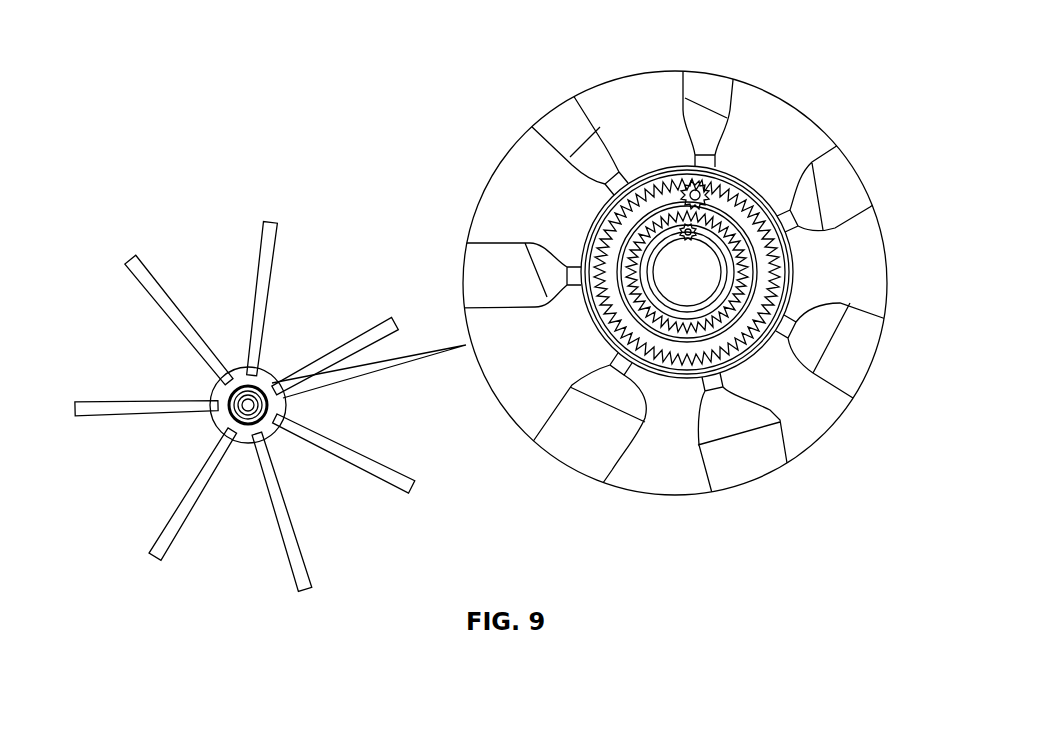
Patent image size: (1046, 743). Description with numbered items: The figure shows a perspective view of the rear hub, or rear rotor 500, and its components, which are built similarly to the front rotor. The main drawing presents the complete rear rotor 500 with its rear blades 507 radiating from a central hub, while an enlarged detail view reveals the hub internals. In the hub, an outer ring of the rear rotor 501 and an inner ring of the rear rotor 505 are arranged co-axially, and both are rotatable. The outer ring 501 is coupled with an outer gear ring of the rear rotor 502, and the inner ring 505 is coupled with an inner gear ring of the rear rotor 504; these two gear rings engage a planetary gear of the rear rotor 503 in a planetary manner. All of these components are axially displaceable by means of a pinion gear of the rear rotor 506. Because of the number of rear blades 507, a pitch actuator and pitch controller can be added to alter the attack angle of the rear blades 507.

The fan 500 is at (245, 377).
The outer ring of the rear rotor 501 is at (584, 215).
The outer gear ring of the rear rotor 502 is at (692, 240).
The planetary gear of the rear rotor 503 is at (726, 183).
The inner gear ring of the rear rotor 504 is at (652, 328).
The inner ring of the rear rotor 505 is at (679, 307).
The pinion gear of the rear rotor 506 is at (750, 252).
The rear blades 507 is at (569, 146).